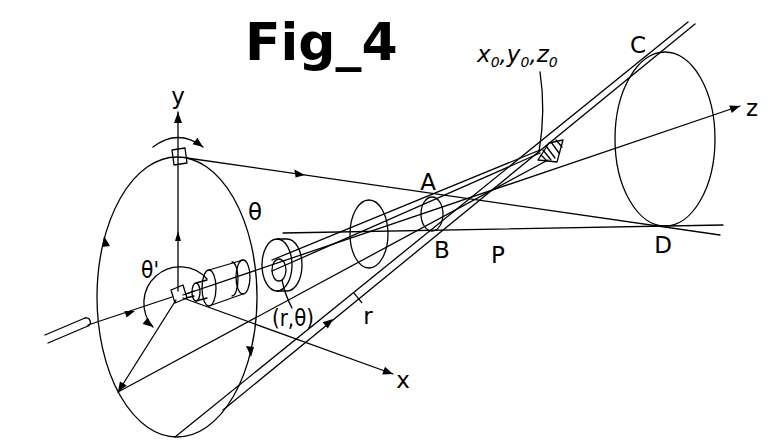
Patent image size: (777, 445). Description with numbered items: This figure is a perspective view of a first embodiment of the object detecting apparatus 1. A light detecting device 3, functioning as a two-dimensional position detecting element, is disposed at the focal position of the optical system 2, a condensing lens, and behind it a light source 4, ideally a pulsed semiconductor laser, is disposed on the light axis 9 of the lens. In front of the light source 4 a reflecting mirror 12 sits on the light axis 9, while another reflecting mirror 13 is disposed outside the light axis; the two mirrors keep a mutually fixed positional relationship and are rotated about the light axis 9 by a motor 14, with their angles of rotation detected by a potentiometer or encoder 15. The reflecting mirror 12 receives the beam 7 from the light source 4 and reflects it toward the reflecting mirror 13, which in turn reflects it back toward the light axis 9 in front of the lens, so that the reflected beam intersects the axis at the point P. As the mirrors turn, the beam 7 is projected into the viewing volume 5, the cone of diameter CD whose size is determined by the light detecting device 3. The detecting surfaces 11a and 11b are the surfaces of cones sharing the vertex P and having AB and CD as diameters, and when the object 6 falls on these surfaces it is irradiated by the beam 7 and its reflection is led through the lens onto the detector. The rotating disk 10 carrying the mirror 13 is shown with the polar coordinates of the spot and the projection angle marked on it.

The object detecting apparatus 1 is at (455, 300).
The optical system 2 is at (369, 200).
The light detecting device 3 is at (276, 239).
The light source 4 is at (60, 330).
The viewing volume 5 is at (548, 231).
The object 6 is at (566, 163).
The beam 7 is at (333, 180).
The light axis 9 is at (565, 162).
The rotating disk 10 is at (108, 373).
The detecting surface 11a is at (453, 188).
The detecting surface 11b is at (512, 163).
The reflecting mirror 12 is at (180, 304).
The reflecting mirror 13 is at (168, 161).
The motor 14 is at (204, 282).
The potentiometer or encoder 15 is at (236, 265).